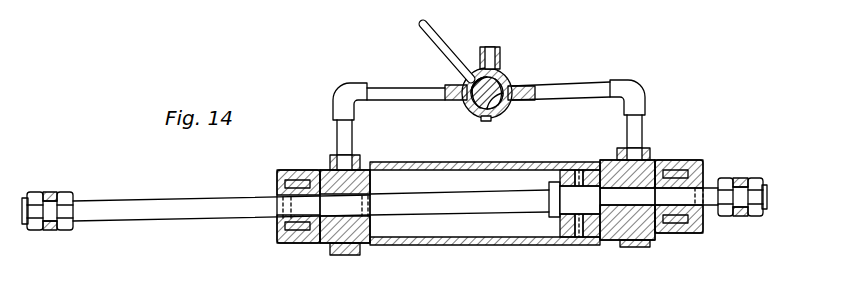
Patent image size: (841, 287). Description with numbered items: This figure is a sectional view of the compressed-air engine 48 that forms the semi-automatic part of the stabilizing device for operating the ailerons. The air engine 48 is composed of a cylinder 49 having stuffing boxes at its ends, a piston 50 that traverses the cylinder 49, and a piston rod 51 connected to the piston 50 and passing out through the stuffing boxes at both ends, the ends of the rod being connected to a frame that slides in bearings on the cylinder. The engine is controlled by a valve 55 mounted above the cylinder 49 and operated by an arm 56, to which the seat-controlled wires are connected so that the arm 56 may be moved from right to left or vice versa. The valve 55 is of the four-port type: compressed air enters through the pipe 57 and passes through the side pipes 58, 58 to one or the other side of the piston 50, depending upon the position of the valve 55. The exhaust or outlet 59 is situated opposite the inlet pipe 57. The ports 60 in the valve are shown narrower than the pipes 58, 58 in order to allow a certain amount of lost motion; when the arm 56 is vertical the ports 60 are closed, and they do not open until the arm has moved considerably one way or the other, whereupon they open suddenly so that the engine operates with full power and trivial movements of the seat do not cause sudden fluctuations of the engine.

The air engine 48 is at (549, 188).
The cylinder 49 is at (470, 243).
The piston 50 is at (580, 240).
The piston rod 51 is at (394, 204).
The valve 55 is at (513, 76).
The arm 56 is at (452, 60).
The inlet pipe 57 is at (498, 50).
The side pipes 58 is at (489, 108).
The exhaust or outlet 59 is at (497, 114).
The ports 60 is at (478, 110).